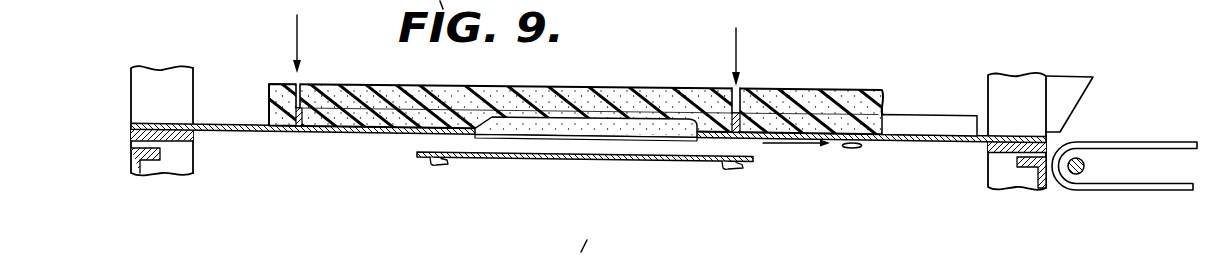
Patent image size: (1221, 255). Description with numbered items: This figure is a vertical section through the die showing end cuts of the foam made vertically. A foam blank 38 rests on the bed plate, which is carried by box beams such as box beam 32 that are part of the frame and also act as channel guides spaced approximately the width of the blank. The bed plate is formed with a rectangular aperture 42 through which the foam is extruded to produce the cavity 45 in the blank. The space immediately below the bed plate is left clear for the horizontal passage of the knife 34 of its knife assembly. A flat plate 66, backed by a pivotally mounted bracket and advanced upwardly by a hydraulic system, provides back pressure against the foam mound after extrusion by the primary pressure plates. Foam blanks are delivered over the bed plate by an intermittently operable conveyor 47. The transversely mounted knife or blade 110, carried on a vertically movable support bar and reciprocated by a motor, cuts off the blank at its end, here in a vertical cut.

The box beam 32 is at (908, 114).
The knife 34 is at (851, 150).
The foam blank 38 is at (600, 86).
The aperture 42 is at (683, 137).
The cavity 45 is at (532, 125).
The conveyor 47 is at (1139, 201).
The flat plate 66 is at (597, 158).
The knife or blade 110 is at (305, 110).